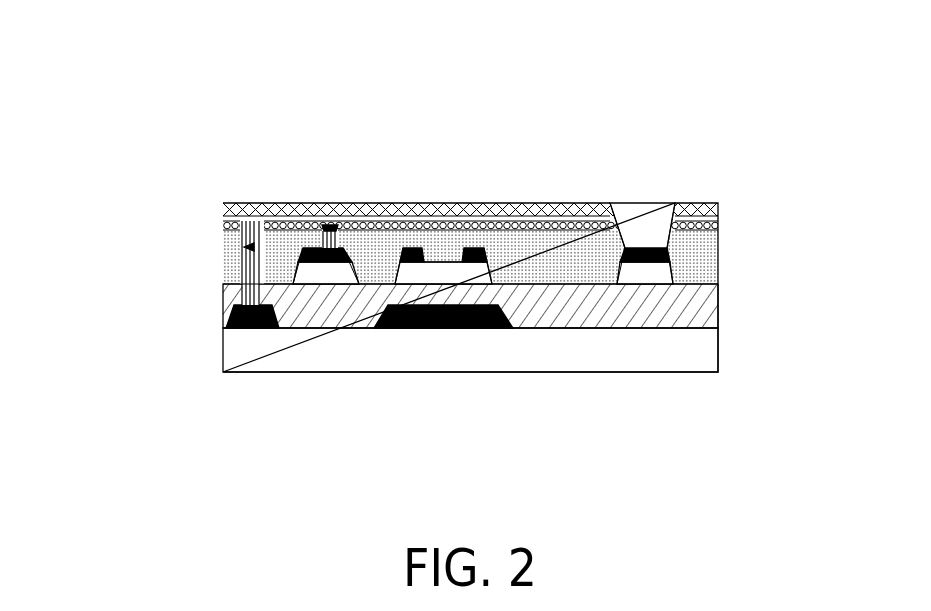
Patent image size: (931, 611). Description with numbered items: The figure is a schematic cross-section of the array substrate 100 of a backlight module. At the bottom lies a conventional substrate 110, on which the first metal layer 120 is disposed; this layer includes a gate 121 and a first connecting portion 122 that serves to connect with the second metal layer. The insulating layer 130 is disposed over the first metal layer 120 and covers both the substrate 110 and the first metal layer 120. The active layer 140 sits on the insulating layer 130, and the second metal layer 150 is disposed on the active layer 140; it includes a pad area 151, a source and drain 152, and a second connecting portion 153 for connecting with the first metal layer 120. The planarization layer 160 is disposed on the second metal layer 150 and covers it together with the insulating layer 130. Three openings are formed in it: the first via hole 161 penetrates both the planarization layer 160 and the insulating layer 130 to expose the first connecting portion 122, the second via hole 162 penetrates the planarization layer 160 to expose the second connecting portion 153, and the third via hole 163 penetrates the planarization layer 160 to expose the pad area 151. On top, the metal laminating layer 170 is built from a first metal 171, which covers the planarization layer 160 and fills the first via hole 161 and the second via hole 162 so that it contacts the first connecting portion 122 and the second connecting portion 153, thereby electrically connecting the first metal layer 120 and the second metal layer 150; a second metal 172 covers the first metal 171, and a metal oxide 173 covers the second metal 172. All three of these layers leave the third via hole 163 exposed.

The array substrate 100 is at (127, 50).
The substrate 110 is at (703, 362).
The first metal layer 120 is at (363, 407).
The gate 121 is at (421, 323).
The first connecting portion 122 is at (247, 329).
The insulating layer 130 is at (715, 309).
The active layer 140 is at (319, 284).
The second metal layer 150 is at (484, 171).
The pad area 151 is at (638, 246).
The source and drain 152 is at (409, 247).
The second connecting portion 153 is at (341, 247).
The planarization layer 160 is at (703, 270).
The first via hole 161 is at (240, 268).
The second via hole 162 is at (330, 220).
The third via hole 163 is at (666, 214).
The metal laminating layer 170 is at (389, 186).
The first metal 171 is at (425, 228).
The second metal 172 is at (223, 218).
The metal oxide 173 is at (223, 204).